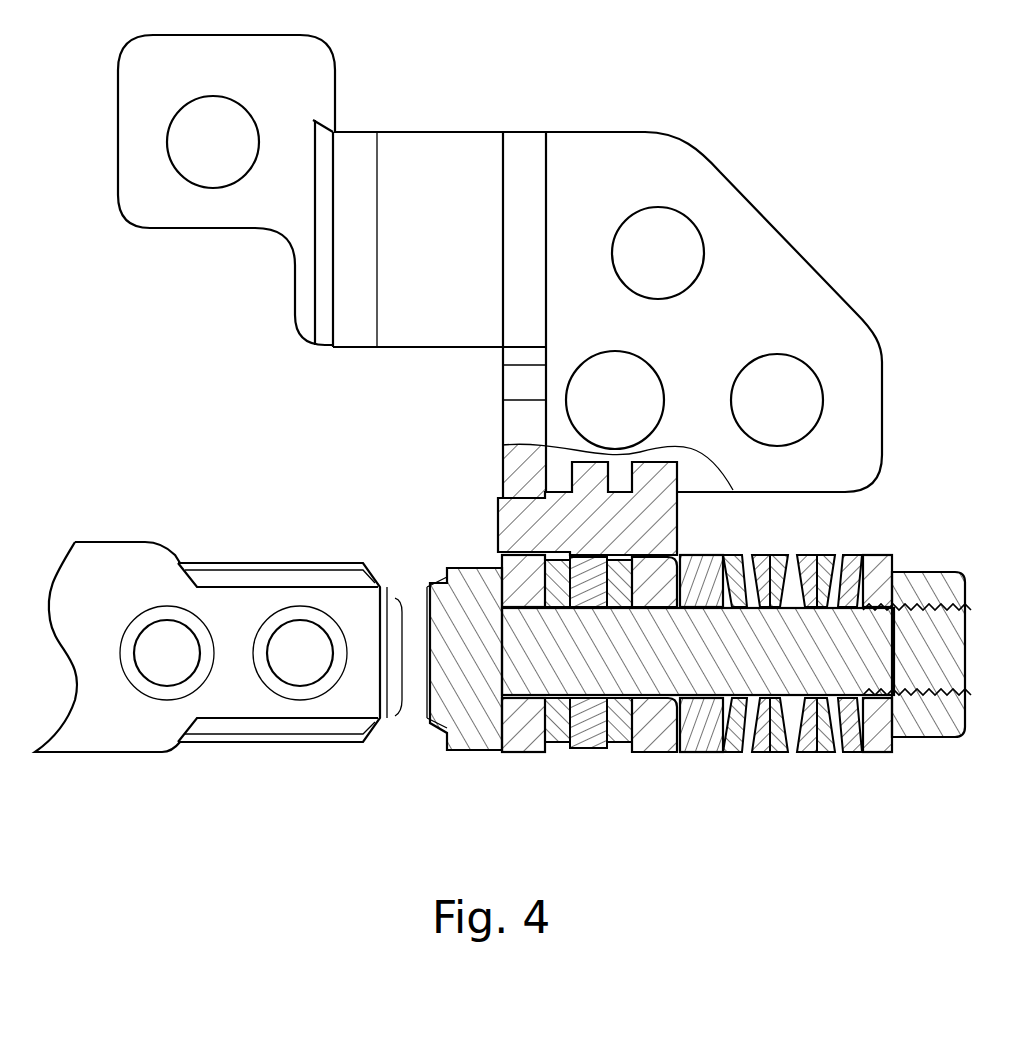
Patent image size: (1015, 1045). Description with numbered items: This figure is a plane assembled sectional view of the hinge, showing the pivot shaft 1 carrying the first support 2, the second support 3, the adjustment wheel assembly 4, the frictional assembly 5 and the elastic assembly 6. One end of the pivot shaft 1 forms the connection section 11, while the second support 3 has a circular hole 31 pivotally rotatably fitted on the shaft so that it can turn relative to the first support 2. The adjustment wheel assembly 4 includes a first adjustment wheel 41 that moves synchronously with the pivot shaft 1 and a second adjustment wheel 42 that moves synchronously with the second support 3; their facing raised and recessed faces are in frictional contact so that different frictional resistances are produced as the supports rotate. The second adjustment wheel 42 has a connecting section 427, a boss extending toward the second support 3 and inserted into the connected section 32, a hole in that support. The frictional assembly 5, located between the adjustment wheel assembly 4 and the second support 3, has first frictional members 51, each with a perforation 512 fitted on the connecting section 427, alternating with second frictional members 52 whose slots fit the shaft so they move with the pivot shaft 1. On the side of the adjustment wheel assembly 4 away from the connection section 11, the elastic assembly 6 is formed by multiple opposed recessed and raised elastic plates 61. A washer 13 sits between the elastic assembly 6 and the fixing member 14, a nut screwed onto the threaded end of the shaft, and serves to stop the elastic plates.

The pivot shaft 1 is at (680, 704).
The first support 2 is at (241, 699).
The second support 3 is at (448, 157).
The adjustment wheel assembly 4 is at (683, 740).
The frictional assembly 5 is at (581, 722).
The elastic assembly 6 is at (797, 739).
The connection section 11 is at (280, 742).
The washer 13 is at (875, 752).
The fixing member 14 is at (955, 740).
The circular hole 31 is at (520, 680).
The connected section 32 is at (579, 593).
The first adjustment wheel 41 is at (733, 748).
The second adjustment wheel 42 is at (657, 748).
The first frictional member 51 is at (587, 691).
The second frictional member 52 is at (560, 748).
The recessed and raised elastic plate 61 is at (755, 748).
The connecting section 427 is at (517, 518).
The perforation 512 is at (593, 530).